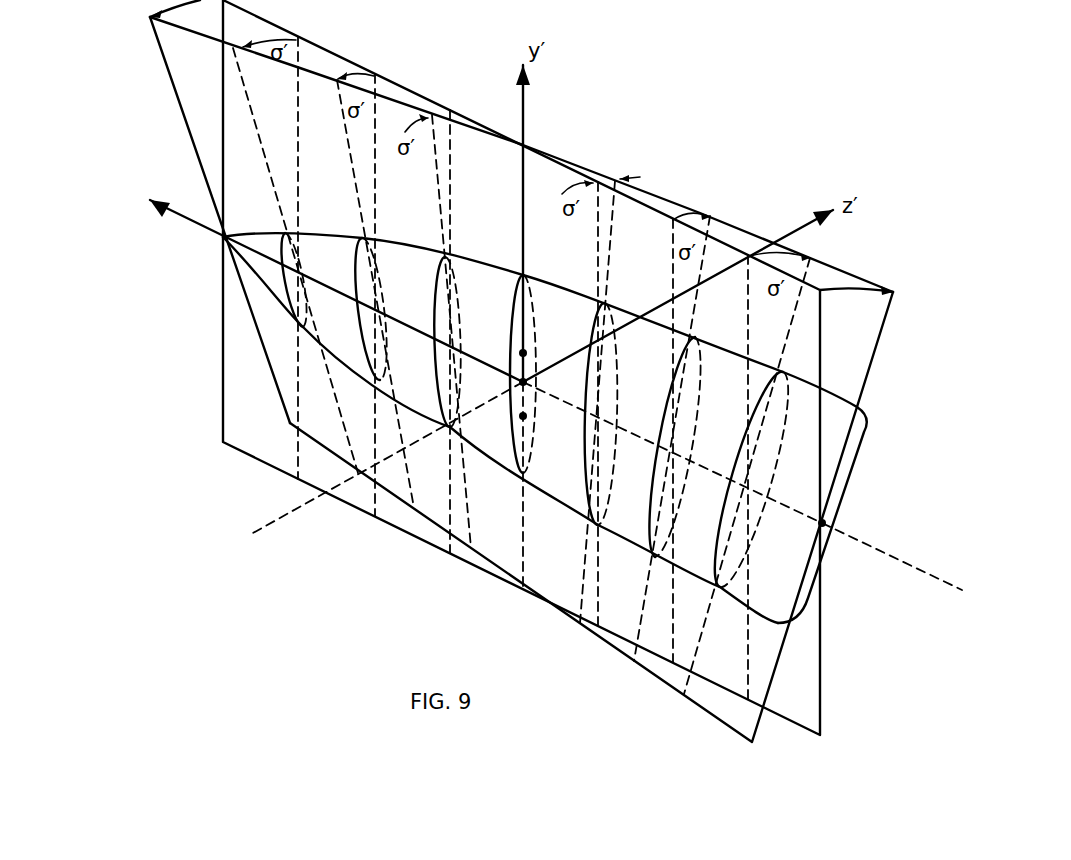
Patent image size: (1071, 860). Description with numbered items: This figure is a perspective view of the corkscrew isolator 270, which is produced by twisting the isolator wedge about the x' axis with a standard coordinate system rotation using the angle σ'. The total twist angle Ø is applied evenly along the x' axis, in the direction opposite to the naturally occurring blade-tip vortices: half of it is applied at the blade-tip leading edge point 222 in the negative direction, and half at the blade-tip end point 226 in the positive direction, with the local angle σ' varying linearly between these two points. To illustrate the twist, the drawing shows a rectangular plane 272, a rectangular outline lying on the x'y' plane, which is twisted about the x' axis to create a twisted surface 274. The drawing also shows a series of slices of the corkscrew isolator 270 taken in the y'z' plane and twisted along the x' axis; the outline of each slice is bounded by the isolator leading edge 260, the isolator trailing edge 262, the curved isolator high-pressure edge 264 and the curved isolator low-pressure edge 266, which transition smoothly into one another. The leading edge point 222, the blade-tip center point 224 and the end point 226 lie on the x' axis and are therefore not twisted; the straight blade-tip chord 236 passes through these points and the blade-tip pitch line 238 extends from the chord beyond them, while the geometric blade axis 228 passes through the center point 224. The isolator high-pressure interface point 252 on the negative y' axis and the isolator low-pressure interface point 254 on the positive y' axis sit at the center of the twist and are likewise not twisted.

The blade-tip leading edge point 222 is at (182, 210).
The blade-tip center point 224 is at (527, 375).
The blade-tip end point 226 is at (820, 527).
The geometric blade axis 228 is at (278, 508).
The blade-tip chord 236 is at (725, 477).
The blade-tip pitch line 238 is at (877, 549).
The isolator high-pressure interface point 252 is at (527, 425).
The isolator low-pressure interface point 254 is at (527, 350).
The isolator leading edge 260 is at (255, 295).
The isolator trailing edge 262 is at (850, 493).
The isolator high-pressure edge 264 is at (500, 480).
The isolator low-pressure edge 266 is at (470, 262).
The corkscrew isolator 270 is at (352, 348).
The rectangular plane 272 is at (360, 62).
The twisted surface 274 is at (157, 58).